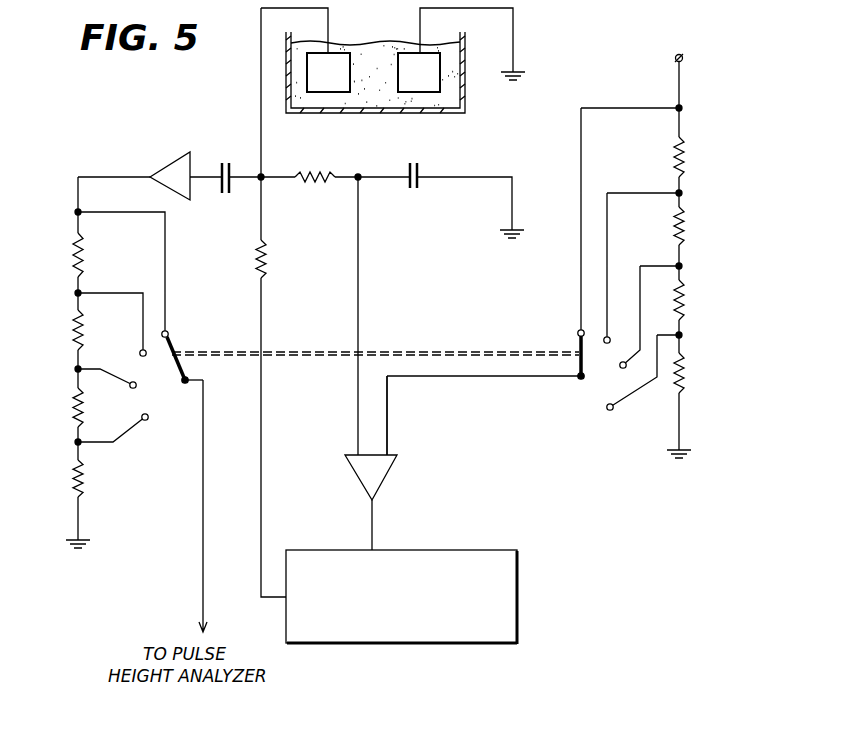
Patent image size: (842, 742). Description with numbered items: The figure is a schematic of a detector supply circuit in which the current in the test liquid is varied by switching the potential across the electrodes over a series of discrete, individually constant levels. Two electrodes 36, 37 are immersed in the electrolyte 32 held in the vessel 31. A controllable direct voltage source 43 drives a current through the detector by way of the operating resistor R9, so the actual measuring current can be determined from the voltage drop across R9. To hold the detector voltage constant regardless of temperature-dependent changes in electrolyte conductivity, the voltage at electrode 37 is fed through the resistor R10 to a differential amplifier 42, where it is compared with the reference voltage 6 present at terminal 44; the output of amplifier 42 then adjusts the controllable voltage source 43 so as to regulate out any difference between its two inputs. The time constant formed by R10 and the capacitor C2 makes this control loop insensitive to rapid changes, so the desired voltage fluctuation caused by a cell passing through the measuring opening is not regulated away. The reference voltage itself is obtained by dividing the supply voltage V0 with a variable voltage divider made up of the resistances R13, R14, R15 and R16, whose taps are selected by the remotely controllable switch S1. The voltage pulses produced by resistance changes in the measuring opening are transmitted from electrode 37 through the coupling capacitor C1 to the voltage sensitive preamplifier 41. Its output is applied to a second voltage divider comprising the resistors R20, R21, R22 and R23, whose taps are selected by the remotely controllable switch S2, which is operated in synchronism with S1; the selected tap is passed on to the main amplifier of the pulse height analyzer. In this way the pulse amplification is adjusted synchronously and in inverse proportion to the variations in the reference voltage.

The vessel 31 is at (393, 113).
The electrolyte 32 is at (360, 93).
The electrode 36 is at (433, 87).
The electrode 37 is at (330, 87).
The voltage sensitive preamplifier 41 is at (172, 170).
The differential amplifier 42 is at (360, 478).
The controllable direct voltage source 43 is at (508, 583).
The terminal 44 is at (488, 389).
The reference voltage 6 is at (449, 415).
The supply voltage V0' V0 is at (677, 45).
The operating resistor R9 is at (273, 259).
The resistor R10 is at (315, 195).
The resistance R13 is at (696, 157).
The resistance R14 is at (696, 226).
The resistance R15 is at (696, 300).
The resistance R16 is at (696, 373).
The resistor R20 is at (58, 255).
The resistor R21 is at (58, 331).
The resistor R22 is at (58, 407).
The resistor R23 is at (58, 479).
The coupling capacitor C1 is at (224, 193).
The capacitor C2 is at (415, 192).
The remotely controllable switch S1' S1 is at (564, 346).
The remotely controllable switch S2' S2 is at (185, 350).